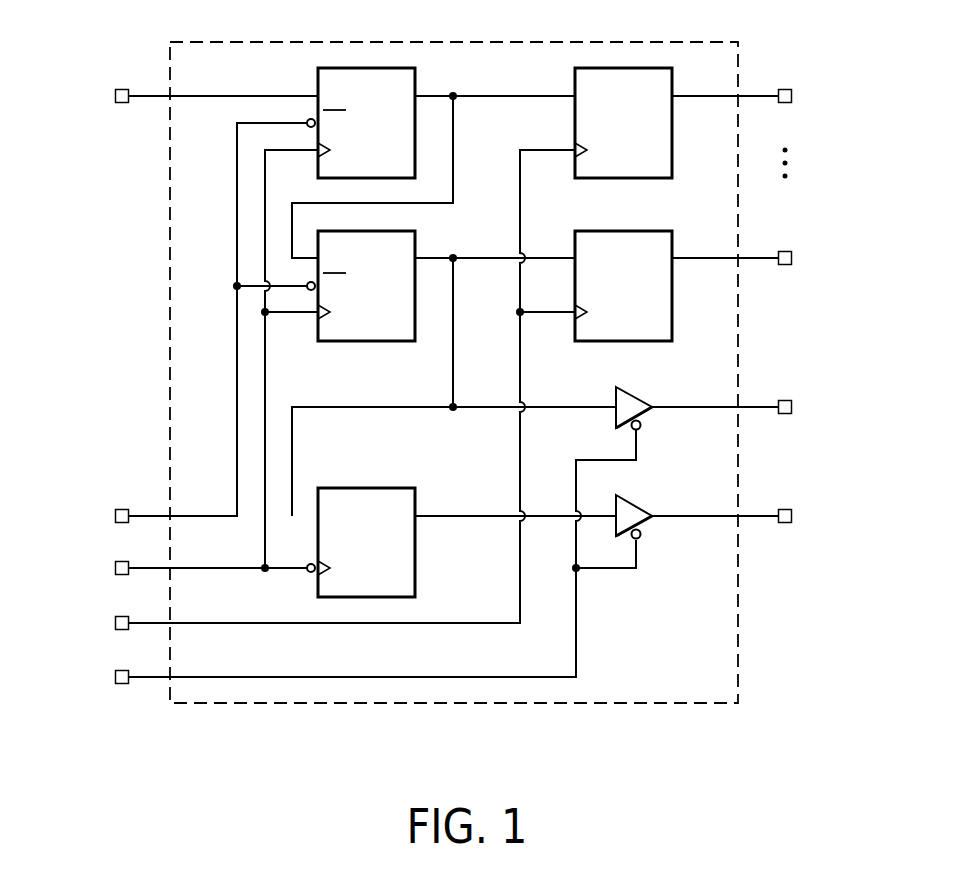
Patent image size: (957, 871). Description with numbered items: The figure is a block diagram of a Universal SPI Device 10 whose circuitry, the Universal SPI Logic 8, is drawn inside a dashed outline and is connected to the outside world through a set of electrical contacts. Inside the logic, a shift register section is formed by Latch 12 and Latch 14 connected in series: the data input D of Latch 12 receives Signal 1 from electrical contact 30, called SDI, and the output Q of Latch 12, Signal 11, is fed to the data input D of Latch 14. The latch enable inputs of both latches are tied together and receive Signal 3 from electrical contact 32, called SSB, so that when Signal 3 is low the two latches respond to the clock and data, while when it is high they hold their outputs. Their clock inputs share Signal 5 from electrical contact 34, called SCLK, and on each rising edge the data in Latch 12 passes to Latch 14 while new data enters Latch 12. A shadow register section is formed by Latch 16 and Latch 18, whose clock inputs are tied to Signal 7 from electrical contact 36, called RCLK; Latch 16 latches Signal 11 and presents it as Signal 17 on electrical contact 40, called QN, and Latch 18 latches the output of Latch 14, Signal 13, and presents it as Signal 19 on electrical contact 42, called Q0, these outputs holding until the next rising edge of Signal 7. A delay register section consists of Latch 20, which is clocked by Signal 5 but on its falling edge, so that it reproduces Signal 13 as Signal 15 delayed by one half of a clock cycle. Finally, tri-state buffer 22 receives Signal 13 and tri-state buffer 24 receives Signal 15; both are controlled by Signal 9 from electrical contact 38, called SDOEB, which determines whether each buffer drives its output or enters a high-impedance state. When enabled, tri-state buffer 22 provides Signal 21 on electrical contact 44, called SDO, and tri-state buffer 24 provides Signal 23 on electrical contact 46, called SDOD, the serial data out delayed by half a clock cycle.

The Signal 1 is at (193, 96).
The Signal 3 is at (193, 516).
The Signal 5 is at (193, 568).
The Signal 7 is at (193, 623).
The Universal SPI Logic 8 is at (590, 42).
The Signal 9 is at (193, 677).
The Universal SPI Device 10 is at (453, 771).
The Signal 11 is at (432, 95).
The Latch 12 is at (387, 159).
The Signal 13 is at (432, 257).
The Latch 14 is at (387, 322).
The Signal 15 is at (432, 515).
The Latch 16 is at (644, 159).
The Signal 17 is at (698, 95).
The Latch 18 is at (644, 322).
The Signal 19 is at (698, 257).
The Latch 20 is at (387, 578).
The Signal 21 is at (698, 406).
The tri-state buffer 22 is at (631, 395).
The Signal 23 is at (698, 515).
The tri-state buffer 24 is at (637, 505).
The electrical contact 30 is at (122, 89).
The electrical contact 32 is at (122, 509).
The electrical contact 34 is at (124, 561).
The electrical contact 36 is at (124, 616).
The electrical contact 38 is at (124, 670).
The electrical contact 40 is at (785, 89).
The electrical contact 42 is at (785, 251).
The electrical contact 44 is at (785, 400).
The electrical contact 46 is at (785, 509).